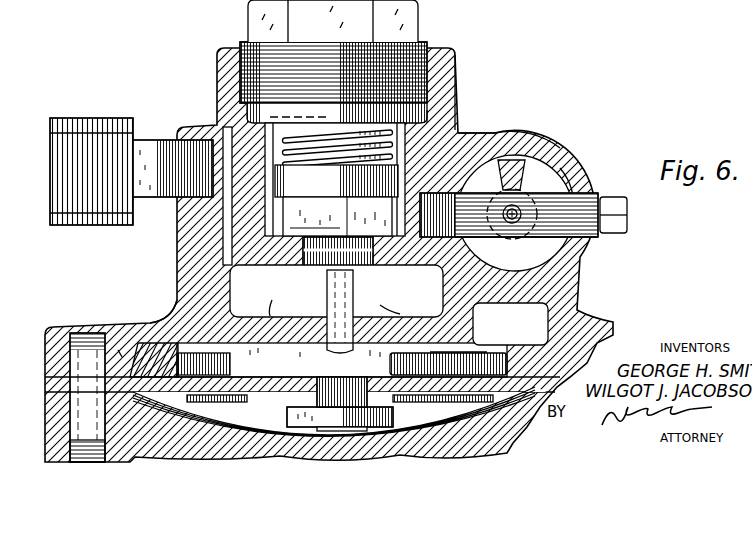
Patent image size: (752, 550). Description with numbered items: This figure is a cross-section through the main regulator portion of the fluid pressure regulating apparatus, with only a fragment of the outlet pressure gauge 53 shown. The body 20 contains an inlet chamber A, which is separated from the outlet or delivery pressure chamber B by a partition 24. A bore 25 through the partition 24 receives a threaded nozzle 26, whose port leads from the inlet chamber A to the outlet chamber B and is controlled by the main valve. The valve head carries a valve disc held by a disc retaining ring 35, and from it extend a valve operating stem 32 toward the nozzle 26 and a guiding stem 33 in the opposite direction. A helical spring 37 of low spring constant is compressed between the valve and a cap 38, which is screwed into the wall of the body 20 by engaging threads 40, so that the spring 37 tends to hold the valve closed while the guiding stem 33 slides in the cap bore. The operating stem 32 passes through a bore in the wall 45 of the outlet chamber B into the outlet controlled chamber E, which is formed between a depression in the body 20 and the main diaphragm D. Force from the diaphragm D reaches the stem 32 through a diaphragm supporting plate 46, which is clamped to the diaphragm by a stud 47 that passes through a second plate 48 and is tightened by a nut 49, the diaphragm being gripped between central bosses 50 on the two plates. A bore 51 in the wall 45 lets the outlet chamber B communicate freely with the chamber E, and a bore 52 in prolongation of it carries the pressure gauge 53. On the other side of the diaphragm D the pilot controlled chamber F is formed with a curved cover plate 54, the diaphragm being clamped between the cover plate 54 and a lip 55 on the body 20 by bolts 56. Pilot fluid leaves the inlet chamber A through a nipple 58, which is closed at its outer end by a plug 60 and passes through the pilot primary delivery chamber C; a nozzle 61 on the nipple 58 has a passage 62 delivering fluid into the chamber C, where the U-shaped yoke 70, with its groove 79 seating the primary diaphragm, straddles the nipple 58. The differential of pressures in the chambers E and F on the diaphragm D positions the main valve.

The body 20 is at (207, 72).
The partition 24 is at (386, 298).
The bore 25 is at (293, 270).
The nozzle 26 is at (337, 216).
The valve operating stem 32 is at (355, 302).
The guiding stem 33 is at (447, 99).
The disc retaining ring 35 is at (463, 136).
The helical spring 37 is at (330, 150).
The cap 38 is at (426, 16).
The threads 40 is at (431, 46).
The wall 45 is at (262, 298).
The diaphragm supporting plate 46 is at (508, 366).
The stud 47 is at (340, 419).
The plate 48 is at (524, 414).
The nut 49 is at (288, 420).
The central bosses 50 is at (303, 350).
The bore 51 is at (213, 323).
The bore 52 is at (230, 228).
The delivery pressure gauge 53 is at (137, 118).
The cover plate 54 is at (43, 405).
The lip 55 is at (147, 343).
The bolts 56 is at (98, 418).
The nipple 58 is at (590, 191).
The plug 60 is at (628, 221).
The nozzle 61 is at (583, 166).
The passage 62 is at (512, 240).
The yoke 70 is at (526, 133).
The groove 79 is at (547, 242).
The inlet chamber A is at (450, 116).
The outlet or delivery pressure chamber B is at (240, 280).
The pilot primary delivery chamber C is at (546, 160).
The main diaphragm D is at (122, 355).
The outlet or delivery pressure controlled chamber E is at (510, 324).
The pilot controlled pressure chamber F is at (443, 407).